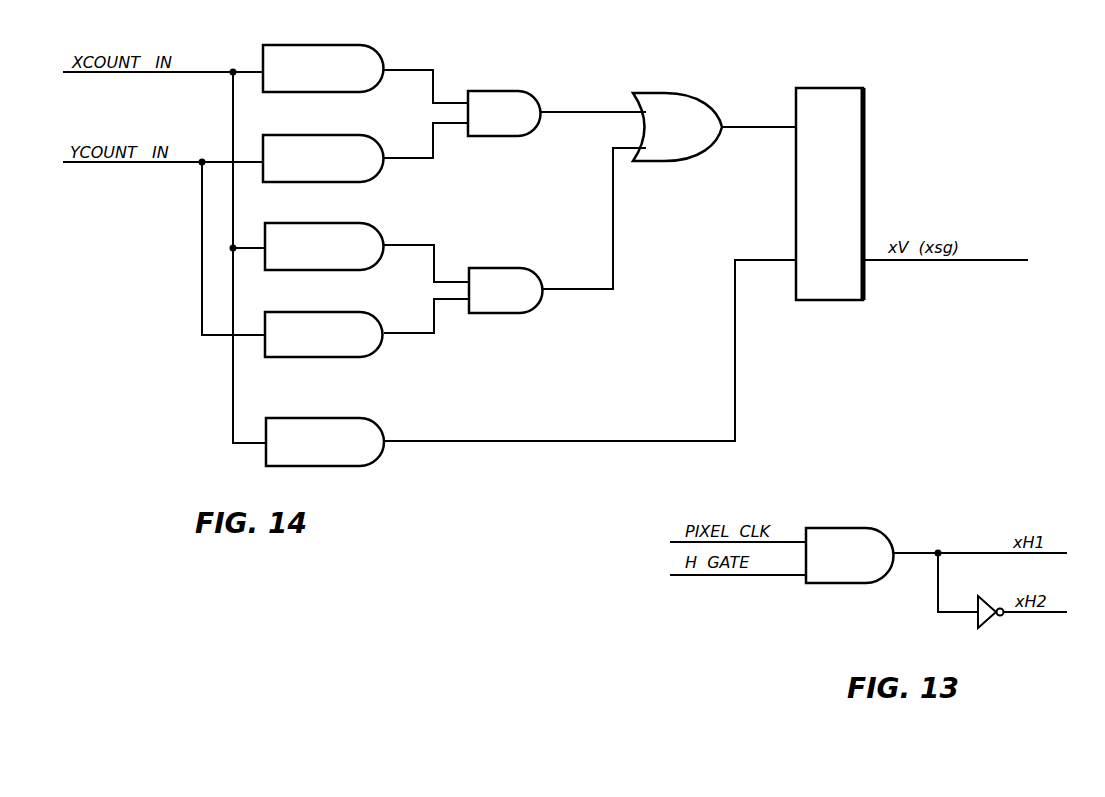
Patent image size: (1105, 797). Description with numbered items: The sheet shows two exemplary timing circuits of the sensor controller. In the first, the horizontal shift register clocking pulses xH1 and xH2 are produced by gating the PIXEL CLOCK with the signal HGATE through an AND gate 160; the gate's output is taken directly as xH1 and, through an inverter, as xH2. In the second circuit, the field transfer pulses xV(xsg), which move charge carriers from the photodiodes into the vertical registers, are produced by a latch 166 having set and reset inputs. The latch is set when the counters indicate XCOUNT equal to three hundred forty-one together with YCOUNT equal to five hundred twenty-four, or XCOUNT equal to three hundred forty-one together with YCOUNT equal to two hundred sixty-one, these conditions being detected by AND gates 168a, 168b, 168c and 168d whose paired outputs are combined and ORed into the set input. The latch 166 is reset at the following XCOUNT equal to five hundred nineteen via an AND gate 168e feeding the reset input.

In FIG. 13, the AND gate 160 is at (862, 528).
In FIG. 14, the latch 166 is at (840, 88).
In FIG. 14, the AND gate 168a is at (340, 45).
In FIG. 14, the AND gate 168b is at (340, 135).
In FIG. 14, the AND gate 168c is at (340, 223).
In FIG. 14, the AND gate 168d is at (340, 312).
In FIG. 14, the AND gate 168e is at (342, 418).